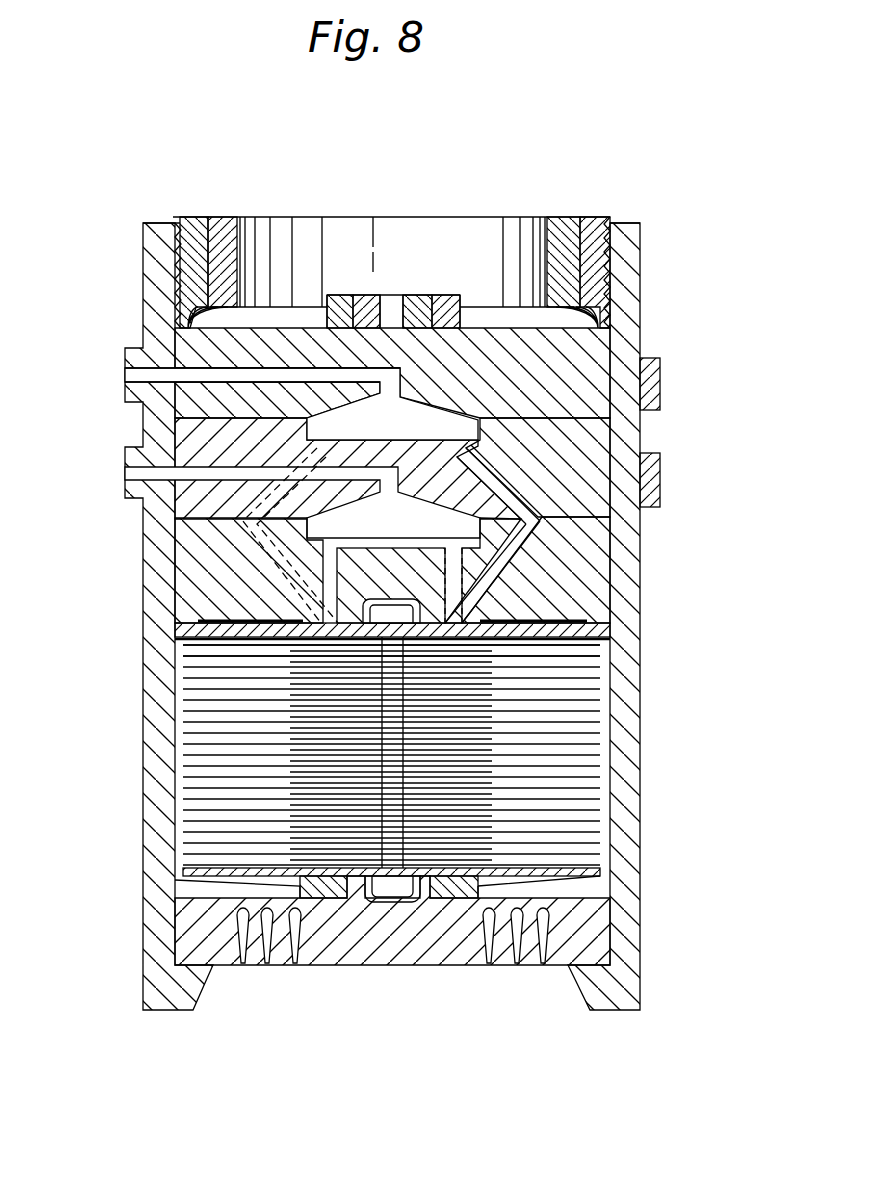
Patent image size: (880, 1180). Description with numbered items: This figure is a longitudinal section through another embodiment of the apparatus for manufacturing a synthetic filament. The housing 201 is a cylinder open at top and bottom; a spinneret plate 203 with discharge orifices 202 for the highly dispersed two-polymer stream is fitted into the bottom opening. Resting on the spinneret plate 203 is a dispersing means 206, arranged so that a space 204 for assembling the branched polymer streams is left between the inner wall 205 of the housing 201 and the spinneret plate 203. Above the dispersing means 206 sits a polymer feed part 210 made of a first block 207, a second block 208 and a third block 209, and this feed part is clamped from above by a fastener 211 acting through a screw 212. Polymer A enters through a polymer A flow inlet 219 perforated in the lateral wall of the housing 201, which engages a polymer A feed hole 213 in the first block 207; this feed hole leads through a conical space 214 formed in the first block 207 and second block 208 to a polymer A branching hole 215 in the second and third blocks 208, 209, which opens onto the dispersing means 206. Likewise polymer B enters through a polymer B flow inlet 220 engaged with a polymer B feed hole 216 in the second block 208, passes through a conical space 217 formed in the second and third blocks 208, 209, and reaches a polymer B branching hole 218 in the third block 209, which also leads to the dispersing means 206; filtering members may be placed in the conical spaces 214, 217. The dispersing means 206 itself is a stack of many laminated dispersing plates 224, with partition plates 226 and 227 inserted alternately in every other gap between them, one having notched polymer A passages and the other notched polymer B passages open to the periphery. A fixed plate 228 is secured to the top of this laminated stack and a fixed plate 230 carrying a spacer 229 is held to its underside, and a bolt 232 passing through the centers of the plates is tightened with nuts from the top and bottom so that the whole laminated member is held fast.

The housing 201 is at (153, 545).
The discharge orifices 202 is at (240, 944).
The spinneret plate 203 is at (345, 950).
The space for assembling branched polymer streams 204 is at (200, 883).
The inner wall 205 is at (183, 833).
The dispersing means 206 is at (400, 748).
The first block 207 is at (605, 388).
The second block 208 is at (597, 452).
The third block 209 is at (593, 553).
The polymer feed part 210 is at (192, 398).
The fastener 211 is at (598, 224).
The screw 212 is at (622, 228).
The polymer A feed hole 213 is at (253, 373).
The conical space 214 is at (443, 420).
The polymer A branching hole 215 is at (527, 508).
The polymer B feed hole 216 is at (325, 453).
The conical space 217 is at (530, 547).
The polymer B branching hole 218 is at (245, 585).
The polymer A flow inlet 219 is at (132, 372).
The polymer B flow inlet 220 is at (132, 472).
The dispersing plates 224 is at (187, 649).
The partition plate 226 is at (287, 641).
The partition plate 227 is at (287, 654).
The fixed plate 228 is at (603, 627).
The spacer 229 is at (462, 893).
The fixed plate 230 is at (600, 872).
The bolt 232 is at (390, 903).